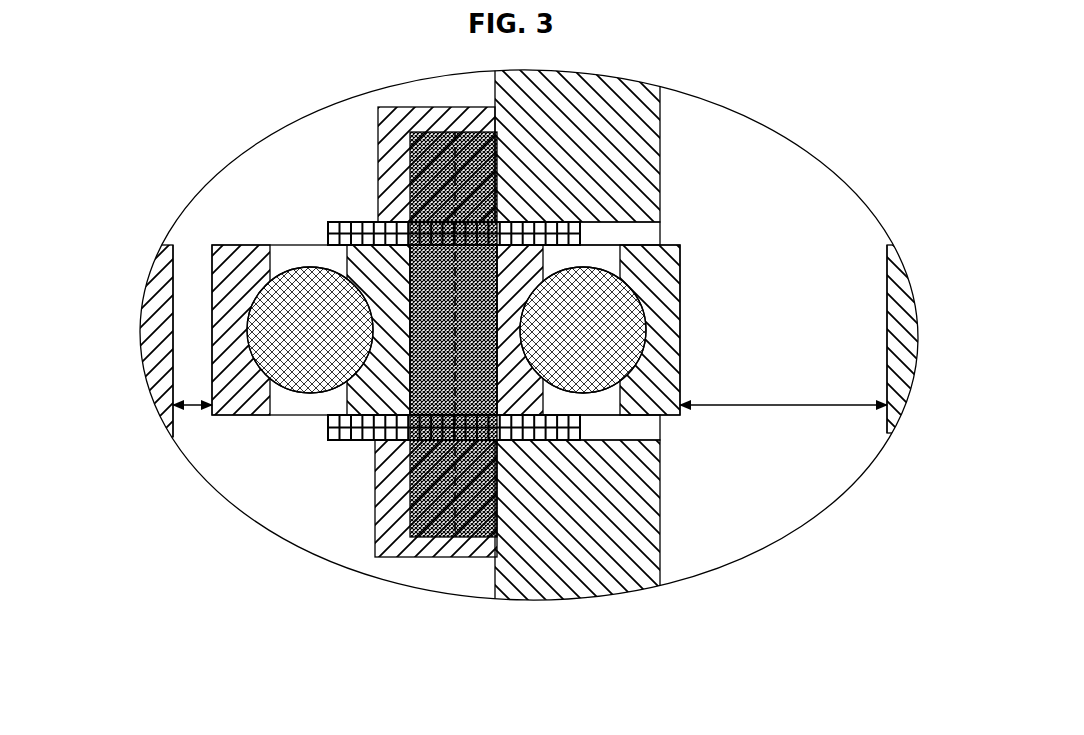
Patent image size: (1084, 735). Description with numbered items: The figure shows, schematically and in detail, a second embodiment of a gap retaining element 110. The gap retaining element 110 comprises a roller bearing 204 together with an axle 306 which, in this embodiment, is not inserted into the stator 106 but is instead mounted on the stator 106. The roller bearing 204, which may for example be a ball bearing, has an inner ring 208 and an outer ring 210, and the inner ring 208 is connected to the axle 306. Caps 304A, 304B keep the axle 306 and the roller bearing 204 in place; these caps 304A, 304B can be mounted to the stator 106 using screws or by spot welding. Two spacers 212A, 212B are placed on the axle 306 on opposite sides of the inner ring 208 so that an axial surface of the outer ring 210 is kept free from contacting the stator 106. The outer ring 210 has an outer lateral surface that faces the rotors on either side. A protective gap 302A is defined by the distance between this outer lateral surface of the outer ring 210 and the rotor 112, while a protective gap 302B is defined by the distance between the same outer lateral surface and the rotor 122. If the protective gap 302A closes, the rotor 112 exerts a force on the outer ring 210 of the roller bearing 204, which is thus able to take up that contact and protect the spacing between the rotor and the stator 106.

The stator 106 is at (520, 563).
The gap retaining element 110 is at (728, 590).
The rotor 112 is at (150, 300).
The rotor 122 is at (905, 275).
The roller bearing 204 is at (483, 358).
The inner ring 208 is at (533, 400).
The outer ring 210 is at (232, 415).
The spacer 212A is at (333, 219).
The spacer 212B is at (343, 443).
The protective gap 302A is at (192, 410).
The protective gap 302B is at (785, 418).
The cap 304A is at (390, 162).
The cap 304B is at (383, 558).
The axle 306 is at (438, 155).